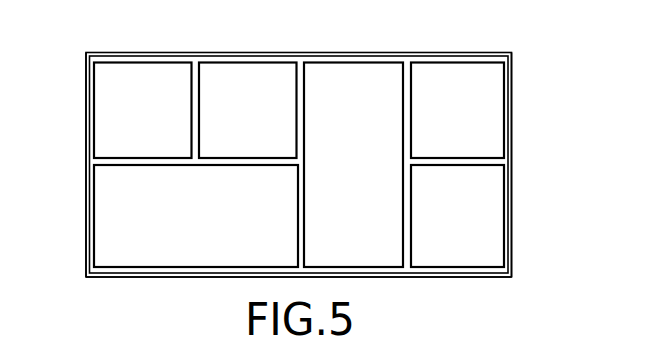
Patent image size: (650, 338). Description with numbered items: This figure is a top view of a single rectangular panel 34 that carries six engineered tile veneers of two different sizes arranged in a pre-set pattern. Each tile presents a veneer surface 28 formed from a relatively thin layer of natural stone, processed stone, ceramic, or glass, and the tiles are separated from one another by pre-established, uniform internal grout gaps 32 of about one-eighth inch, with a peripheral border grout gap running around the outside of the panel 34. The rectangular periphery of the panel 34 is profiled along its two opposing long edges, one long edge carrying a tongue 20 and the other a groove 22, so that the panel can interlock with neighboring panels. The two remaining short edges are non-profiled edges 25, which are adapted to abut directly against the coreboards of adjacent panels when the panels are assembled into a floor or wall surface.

The tongue 20 is at (165, 52).
The groove 22 is at (163, 278).
The non-profiled edges 25 is at (83, 203).
The veneer surface 28 is at (355, 79).
The internal grout gaps 32 is at (135, 171).
The rectangular panel 34 is at (372, 251).